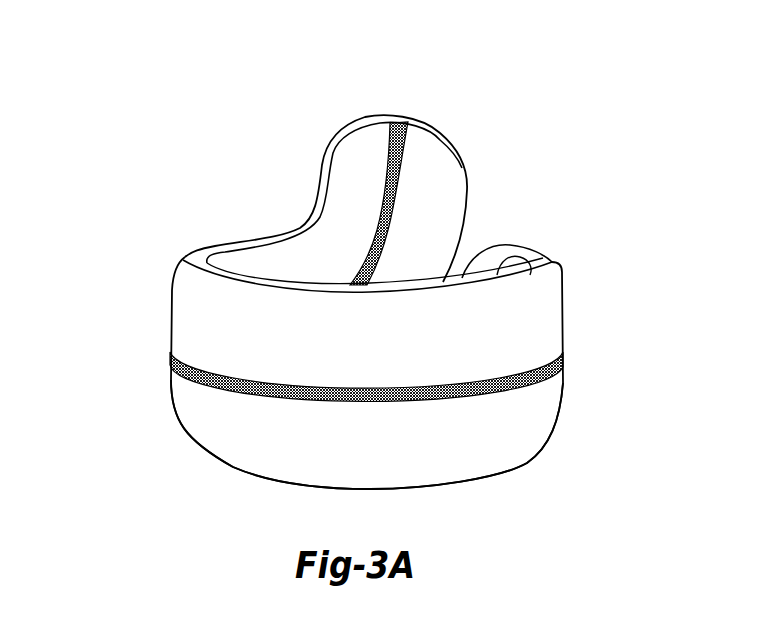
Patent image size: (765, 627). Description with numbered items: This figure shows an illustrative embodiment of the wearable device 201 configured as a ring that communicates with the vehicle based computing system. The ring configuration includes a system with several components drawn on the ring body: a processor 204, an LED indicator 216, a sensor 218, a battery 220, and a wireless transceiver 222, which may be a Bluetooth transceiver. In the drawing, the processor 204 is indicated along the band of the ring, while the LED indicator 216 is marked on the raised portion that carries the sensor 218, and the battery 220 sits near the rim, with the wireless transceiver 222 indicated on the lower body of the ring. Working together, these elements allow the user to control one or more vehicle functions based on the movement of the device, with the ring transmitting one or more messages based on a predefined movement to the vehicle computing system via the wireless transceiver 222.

The wearable device 201 is at (138, 108).
The processor 204 is at (170, 358).
The LED indicator 216 is at (392, 187).
The sensor 218 is at (445, 134).
The battery 220 is at (495, 255).
The wireless transceiver 222 is at (507, 430).